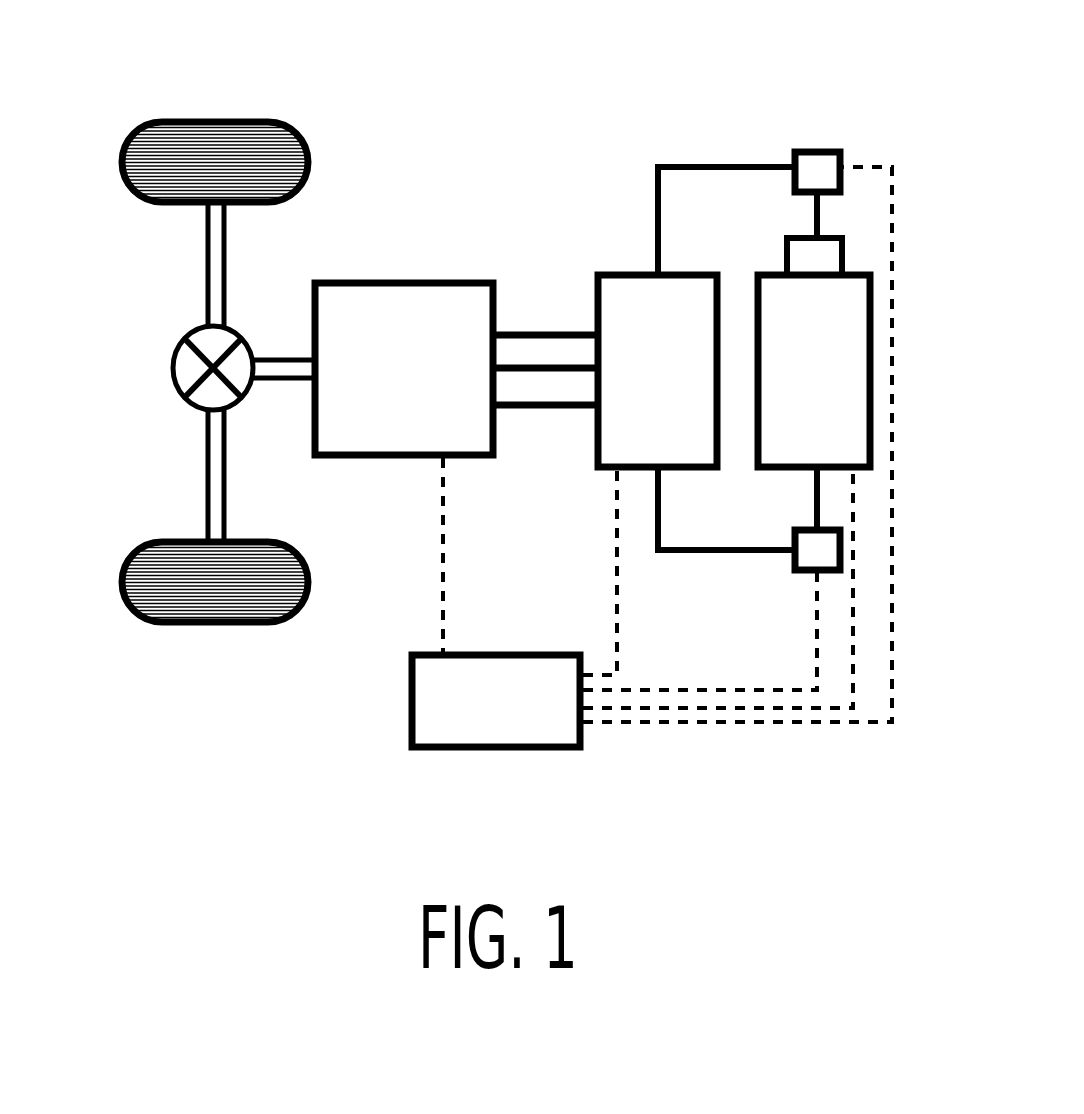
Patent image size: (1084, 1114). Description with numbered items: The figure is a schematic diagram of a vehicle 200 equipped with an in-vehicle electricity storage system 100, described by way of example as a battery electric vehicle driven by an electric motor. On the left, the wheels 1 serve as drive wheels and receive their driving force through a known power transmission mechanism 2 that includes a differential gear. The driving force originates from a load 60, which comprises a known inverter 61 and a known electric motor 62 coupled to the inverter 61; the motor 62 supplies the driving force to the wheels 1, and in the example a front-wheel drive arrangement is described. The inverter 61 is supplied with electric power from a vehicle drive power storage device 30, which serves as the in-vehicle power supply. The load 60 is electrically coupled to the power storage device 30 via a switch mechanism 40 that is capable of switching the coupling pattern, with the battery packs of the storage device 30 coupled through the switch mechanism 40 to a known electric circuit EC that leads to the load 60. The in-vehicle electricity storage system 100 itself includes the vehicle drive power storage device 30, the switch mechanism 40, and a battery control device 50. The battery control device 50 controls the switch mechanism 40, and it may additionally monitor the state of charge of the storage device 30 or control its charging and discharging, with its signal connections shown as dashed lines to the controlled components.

The vehicle 200 is at (103, 50).
The wheels 1 is at (124, 176).
The power transmission mechanism 2 is at (172, 355).
The load 60 is at (529, 105).
The electric motor 62 is at (398, 280).
The inverter 61 is at (603, 270).
The vehicle drive power storage device 30 is at (873, 335).
The electric circuit EC is at (697, 165).
The switch mechanism 40 is at (818, 150).
The battery control device 50 is at (409, 704).
The in-vehicle electricity storage system 100 is at (724, 746).